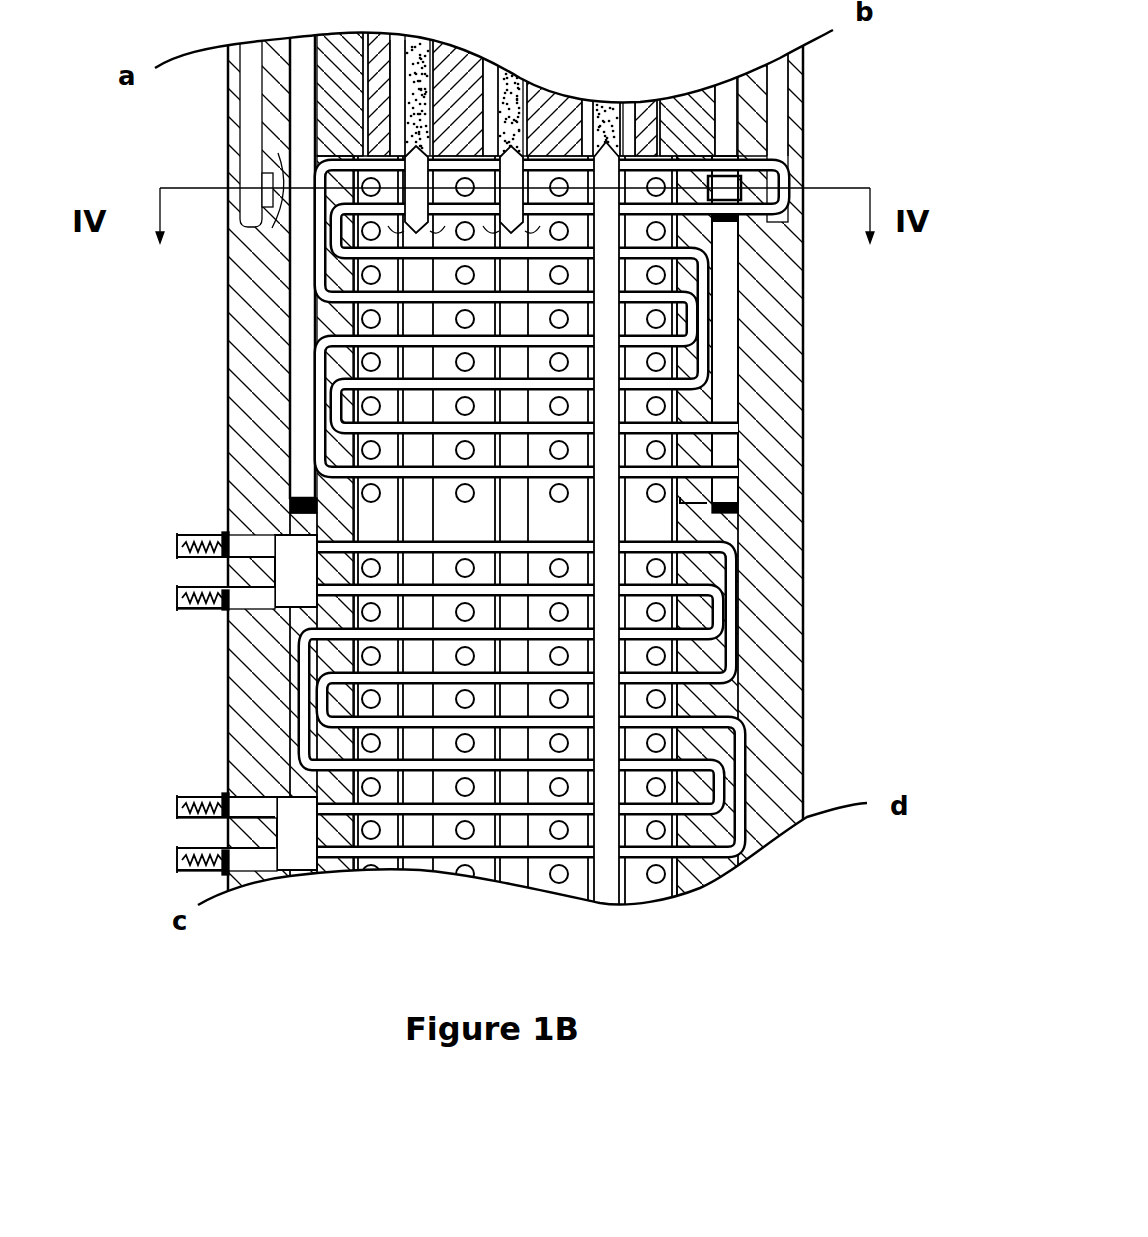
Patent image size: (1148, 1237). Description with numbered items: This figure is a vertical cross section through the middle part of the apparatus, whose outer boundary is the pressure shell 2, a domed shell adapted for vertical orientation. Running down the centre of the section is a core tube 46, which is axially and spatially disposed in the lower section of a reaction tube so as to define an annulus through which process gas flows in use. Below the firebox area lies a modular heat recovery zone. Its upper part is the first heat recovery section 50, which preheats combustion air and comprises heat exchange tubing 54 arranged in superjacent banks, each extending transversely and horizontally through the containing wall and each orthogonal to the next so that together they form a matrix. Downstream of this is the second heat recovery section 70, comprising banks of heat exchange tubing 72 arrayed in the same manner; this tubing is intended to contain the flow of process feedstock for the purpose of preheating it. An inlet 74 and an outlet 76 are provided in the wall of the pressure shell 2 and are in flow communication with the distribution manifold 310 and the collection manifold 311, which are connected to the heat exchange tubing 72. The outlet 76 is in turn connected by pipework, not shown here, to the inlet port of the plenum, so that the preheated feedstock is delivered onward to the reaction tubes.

The pressure shell 2 is at (805, 377).
The core tube 46 is at (610, 300).
The first heat recovery section 50 is at (713, 315).
The heat exchange tubing 54 is at (713, 378).
The second heat recovery section 70 is at (745, 573).
The heat exchange tubing 72 is at (737, 642).
The inlet 74 is at (180, 805).
The outlet 76 is at (232, 592).
The distribution manifold 310 is at (298, 840).
The collection manifold 311 is at (293, 543).